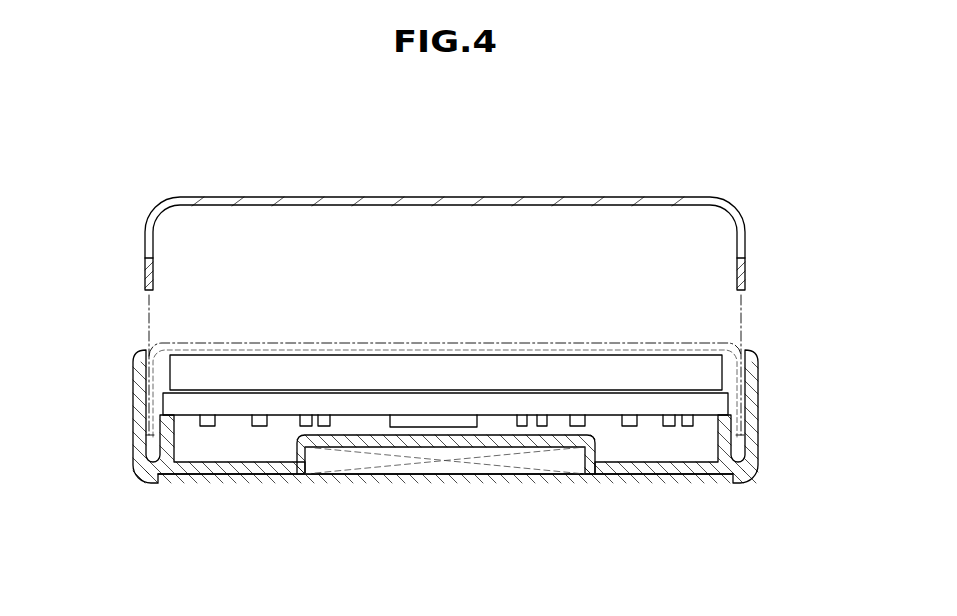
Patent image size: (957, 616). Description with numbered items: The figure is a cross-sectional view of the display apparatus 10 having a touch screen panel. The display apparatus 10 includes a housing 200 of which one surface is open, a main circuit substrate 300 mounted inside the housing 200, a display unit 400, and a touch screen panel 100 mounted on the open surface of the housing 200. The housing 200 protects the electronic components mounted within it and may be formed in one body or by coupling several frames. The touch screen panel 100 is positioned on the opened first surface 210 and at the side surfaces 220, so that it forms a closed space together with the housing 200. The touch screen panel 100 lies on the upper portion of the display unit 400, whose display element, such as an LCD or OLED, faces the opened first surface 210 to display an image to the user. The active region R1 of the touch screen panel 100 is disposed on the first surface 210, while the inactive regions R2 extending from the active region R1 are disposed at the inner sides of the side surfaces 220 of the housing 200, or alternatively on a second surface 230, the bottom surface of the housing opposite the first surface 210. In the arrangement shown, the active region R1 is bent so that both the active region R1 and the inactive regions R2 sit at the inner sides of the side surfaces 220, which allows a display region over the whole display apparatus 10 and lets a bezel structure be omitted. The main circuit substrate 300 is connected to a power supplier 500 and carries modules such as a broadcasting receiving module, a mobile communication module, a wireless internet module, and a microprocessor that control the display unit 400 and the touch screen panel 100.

The display apparatus 10 is at (165, 161).
The touch screen panel 100 is at (476, 266).
The active region R1 is at (453, 203).
The inactive regions R2 is at (746, 274).
The first surface 210 is at (543, 350).
The display unit 400 is at (708, 370).
The main circuit substrate 300 is at (717, 403).
The housing 200 is at (447, 456).
The side surfaces 220 is at (138, 431).
The second surface 230 is at (224, 467).
The power supplier 500 is at (446, 466).